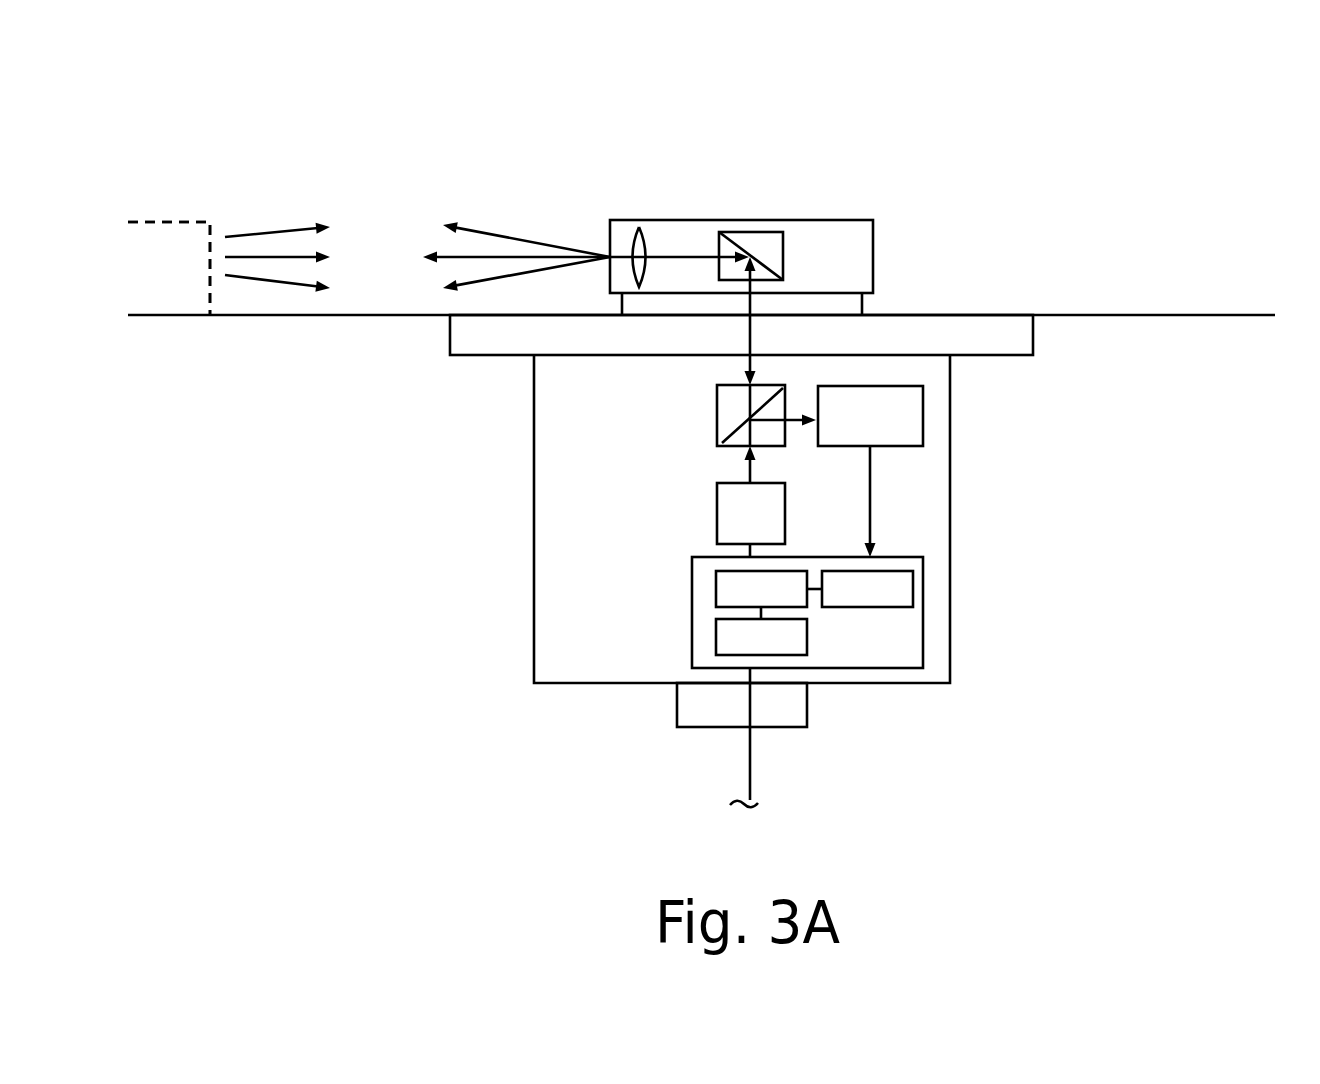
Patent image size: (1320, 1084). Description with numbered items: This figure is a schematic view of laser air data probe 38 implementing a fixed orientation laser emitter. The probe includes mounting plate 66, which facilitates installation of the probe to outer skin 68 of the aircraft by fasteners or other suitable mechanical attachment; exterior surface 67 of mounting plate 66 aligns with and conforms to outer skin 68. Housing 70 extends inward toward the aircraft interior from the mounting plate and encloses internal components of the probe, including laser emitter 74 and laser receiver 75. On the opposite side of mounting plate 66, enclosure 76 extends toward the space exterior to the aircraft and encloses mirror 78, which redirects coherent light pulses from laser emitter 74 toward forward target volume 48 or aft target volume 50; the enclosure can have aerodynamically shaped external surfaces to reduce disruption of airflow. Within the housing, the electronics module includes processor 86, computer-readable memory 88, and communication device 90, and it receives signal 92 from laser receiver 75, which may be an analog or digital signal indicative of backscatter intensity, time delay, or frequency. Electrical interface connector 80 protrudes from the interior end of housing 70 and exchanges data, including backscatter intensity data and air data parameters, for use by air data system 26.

The air data system 26 is at (758, 847).
The laser air data probe 38 is at (1096, 138).
The forward target volume 48 is at (206, 222).
The aft target volume 50 is at (169, 268).
The mounting plate 66 is at (1065, 335).
The exterior surface 67 is at (977, 306).
The outer skin 68 is at (1208, 315).
The housing 70 is at (951, 562).
The laser emitter 74 is at (765, 527).
The laser receiver 75 is at (882, 428).
The enclosure 76 is at (808, 220).
The mirror 78 is at (786, 252).
The electrical interface connector 80 is at (808, 710).
The processor 86 is at (773, 601).
The computer-readable memory 88 is at (883, 601).
The communication device 90 is at (773, 649).
The signal 92 is at (872, 503).